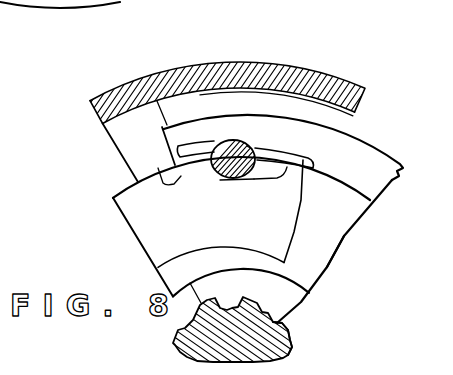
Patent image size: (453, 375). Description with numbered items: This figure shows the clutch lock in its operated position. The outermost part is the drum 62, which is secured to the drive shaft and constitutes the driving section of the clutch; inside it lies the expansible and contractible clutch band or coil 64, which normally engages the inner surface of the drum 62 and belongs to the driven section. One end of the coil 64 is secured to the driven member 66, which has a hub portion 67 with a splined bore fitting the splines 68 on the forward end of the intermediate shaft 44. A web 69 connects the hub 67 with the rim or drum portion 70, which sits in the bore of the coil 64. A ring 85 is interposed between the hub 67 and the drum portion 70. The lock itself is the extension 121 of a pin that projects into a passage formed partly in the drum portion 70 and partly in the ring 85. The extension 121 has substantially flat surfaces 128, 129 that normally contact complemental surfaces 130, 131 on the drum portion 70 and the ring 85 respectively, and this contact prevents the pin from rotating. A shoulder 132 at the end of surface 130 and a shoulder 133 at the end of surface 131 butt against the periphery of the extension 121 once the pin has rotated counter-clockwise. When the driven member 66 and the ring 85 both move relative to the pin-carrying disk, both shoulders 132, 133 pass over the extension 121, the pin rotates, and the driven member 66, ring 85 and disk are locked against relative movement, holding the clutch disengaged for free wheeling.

The intermediate shaft 44 is at (291, 336).
The drum 62 is at (328, 82).
The clutch member or band or coil 64 is at (213, 102).
The driven member 66 is at (328, 266).
The hub portion 67 is at (287, 302).
The splines 68 is at (172, 343).
The web 69 is at (341, 241).
The rim or drum portion 70 is at (380, 195).
The ring 85 is at (143, 232).
The extension 121 is at (236, 152).
The flat surface 128 is at (214, 146).
The flat surface 129 is at (244, 180).
The complemental surface 130 is at (290, 155).
The complemental surface 131 is at (192, 174).
The shoulder 132 is at (247, 146).
The shoulder 133 is at (223, 181).